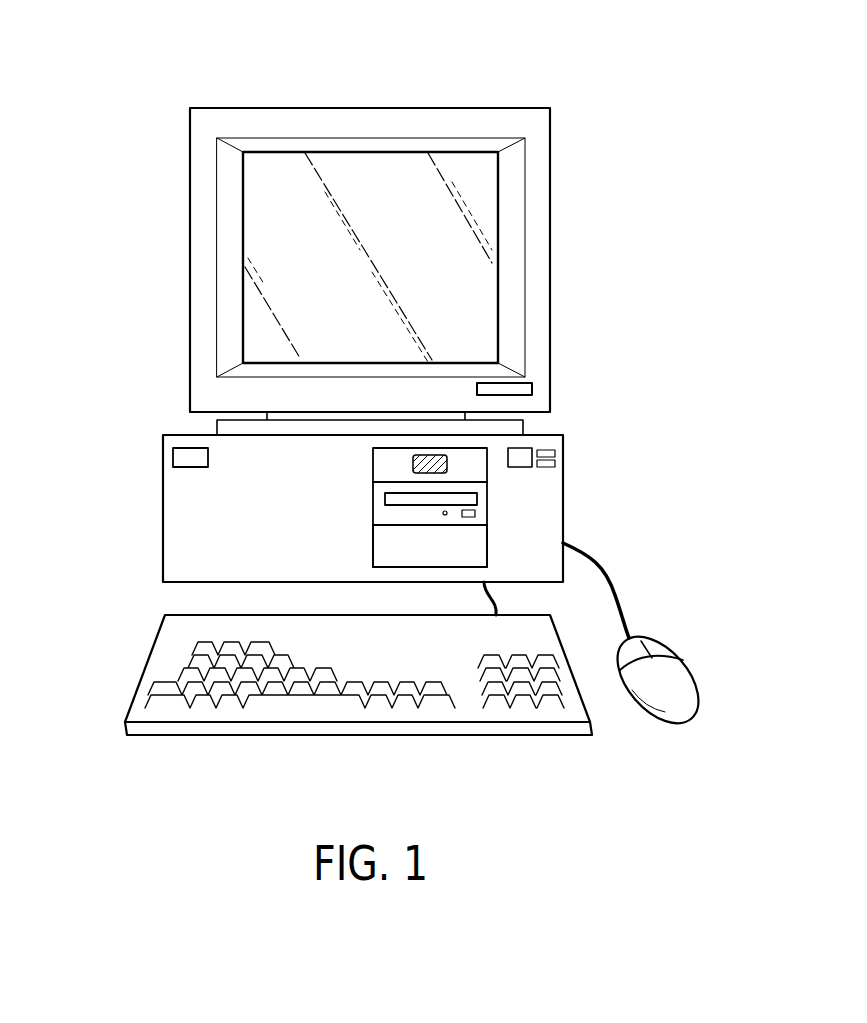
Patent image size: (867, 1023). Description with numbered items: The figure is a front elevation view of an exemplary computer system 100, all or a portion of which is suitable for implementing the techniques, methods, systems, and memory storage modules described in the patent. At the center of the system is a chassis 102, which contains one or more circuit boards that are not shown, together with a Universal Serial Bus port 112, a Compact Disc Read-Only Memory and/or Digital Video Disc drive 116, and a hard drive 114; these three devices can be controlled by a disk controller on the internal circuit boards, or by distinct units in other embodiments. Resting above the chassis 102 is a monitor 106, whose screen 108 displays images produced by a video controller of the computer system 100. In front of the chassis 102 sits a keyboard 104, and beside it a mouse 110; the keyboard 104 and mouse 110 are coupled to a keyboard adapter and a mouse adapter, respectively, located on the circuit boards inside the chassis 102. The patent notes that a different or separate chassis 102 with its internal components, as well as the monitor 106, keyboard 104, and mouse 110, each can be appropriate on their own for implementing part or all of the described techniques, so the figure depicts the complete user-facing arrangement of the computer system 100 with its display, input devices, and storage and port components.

The computer system 100 is at (543, 88).
The chassis 102 is at (163, 509).
The keyboard 104 is at (144, 667).
The monitor 106 is at (263, 108).
The screen 108 is at (290, 262).
The mouse 110 is at (680, 660).
The Universal Serial Bus (USB) port 112 is at (449, 463).
The hard drive 114 is at (480, 547).
The Compact Disc Read-Only Memory (CD-ROM) and/or Digital Video Disc (DVD) drive 116 is at (487, 504).